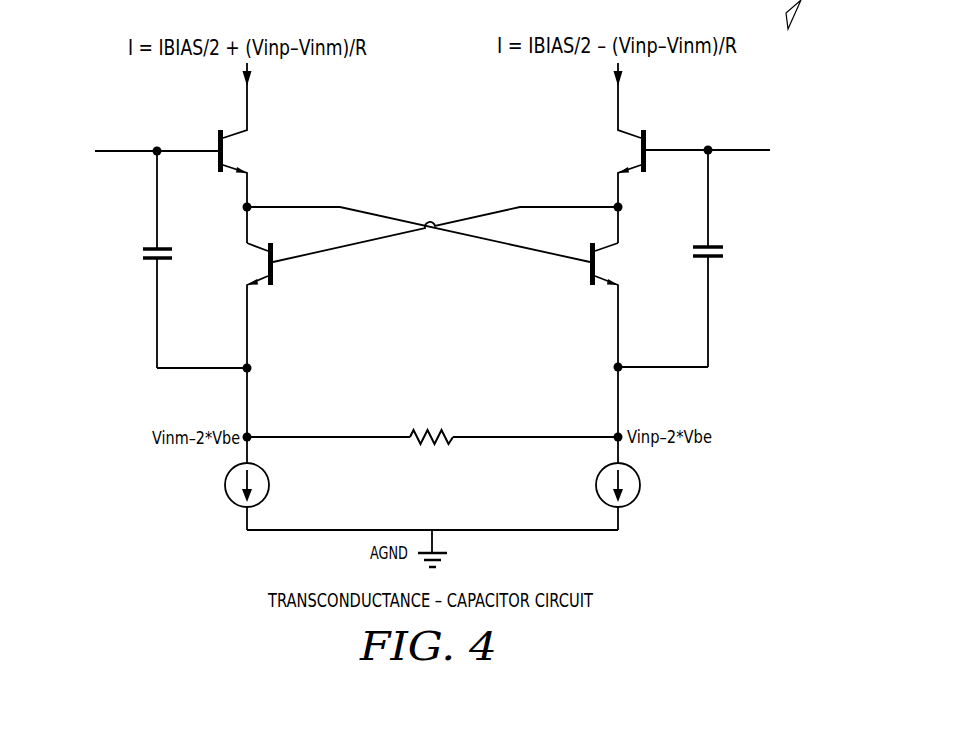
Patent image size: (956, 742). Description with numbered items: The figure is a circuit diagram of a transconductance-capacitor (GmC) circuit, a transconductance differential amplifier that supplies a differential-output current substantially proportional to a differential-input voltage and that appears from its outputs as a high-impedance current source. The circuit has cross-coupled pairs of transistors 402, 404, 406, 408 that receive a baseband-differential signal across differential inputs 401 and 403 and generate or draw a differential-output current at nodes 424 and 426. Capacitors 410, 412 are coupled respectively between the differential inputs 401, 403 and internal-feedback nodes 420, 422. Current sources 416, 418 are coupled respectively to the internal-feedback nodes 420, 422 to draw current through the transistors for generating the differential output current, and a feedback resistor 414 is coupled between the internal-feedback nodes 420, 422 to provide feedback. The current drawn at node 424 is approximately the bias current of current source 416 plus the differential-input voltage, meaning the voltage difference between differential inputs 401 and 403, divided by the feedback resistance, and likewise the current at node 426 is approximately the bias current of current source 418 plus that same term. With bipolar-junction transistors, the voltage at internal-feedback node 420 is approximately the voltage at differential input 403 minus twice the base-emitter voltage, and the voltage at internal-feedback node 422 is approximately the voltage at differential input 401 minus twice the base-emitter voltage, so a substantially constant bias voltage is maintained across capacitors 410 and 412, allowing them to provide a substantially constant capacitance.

The differential input 401 is at (111, 150).
The transistor 402 is at (218, 163).
The differential input 403 is at (752, 149).
The transistor 404 is at (647, 163).
The transistor 406 is at (274, 270).
The transistor 408 is at (589, 269).
The capacitor 410 is at (143, 250).
The capacitor 412 is at (718, 246).
The feedback resistor 414 is at (430, 446).
The current source 416 is at (262, 469).
The current source 418 is at (603, 469).
The internal-feedback node 420 is at (252, 367).
The internal-feedback node 422 is at (613, 367).
The node 424 is at (251, 82).
The node 426 is at (614, 81).